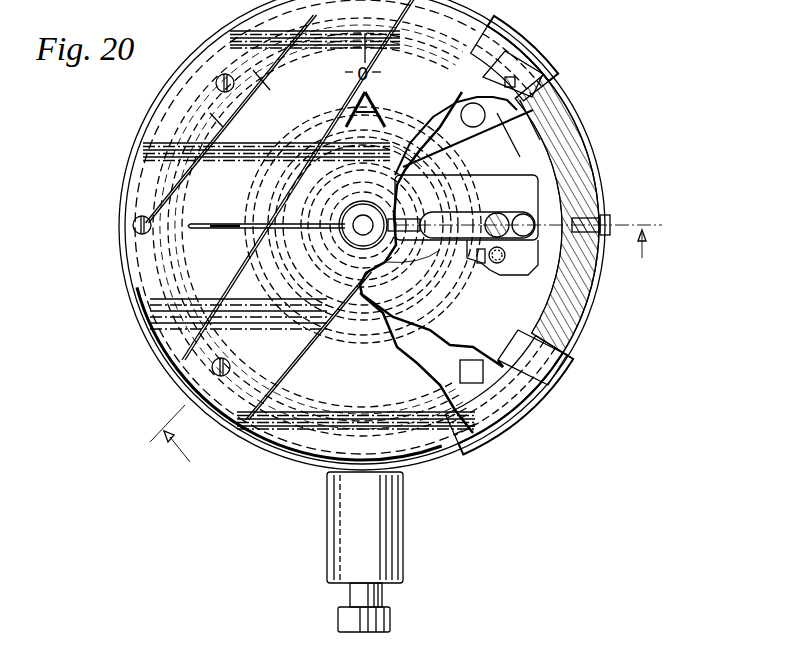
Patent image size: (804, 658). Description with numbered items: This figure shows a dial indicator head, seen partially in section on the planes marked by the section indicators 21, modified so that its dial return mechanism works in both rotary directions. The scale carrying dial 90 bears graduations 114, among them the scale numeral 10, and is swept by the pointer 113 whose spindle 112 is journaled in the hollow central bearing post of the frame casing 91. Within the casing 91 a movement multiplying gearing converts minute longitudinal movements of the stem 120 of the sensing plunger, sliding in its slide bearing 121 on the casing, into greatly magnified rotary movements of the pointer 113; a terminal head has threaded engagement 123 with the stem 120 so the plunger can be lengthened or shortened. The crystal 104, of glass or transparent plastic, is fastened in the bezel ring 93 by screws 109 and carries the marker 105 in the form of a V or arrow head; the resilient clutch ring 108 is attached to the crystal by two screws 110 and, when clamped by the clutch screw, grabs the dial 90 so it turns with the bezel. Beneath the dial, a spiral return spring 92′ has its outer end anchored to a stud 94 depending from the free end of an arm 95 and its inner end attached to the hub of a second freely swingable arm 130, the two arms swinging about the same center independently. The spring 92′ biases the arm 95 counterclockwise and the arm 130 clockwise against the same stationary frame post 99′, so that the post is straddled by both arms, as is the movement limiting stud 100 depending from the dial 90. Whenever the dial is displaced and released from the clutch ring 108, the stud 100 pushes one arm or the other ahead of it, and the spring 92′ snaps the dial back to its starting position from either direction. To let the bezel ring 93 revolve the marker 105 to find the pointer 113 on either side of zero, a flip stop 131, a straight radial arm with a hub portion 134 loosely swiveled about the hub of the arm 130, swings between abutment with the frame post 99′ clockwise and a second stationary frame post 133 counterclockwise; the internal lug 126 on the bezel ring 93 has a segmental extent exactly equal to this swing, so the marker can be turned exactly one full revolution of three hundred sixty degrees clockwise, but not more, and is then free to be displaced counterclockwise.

The gauge 10 is at (362, 412).
The section line 21 is at (411, 350).
The dial 90 is at (540, 56).
The frame casing 91 is at (527, 308).
The return spring 92′ is at (420, 297).
The bezel ring 93 is at (577, 155).
The stud 94 is at (490, 263).
The arm 95 is at (520, 276).
The stationary frame post 99′ is at (532, 220).
The movement limiting stud 100 is at (502, 216).
The crystal 104 is at (450, 347).
The marker 105 is at (376, 103).
The resilient clutch ring 108 is at (522, 45).
The screws 109 is at (133, 226).
The screws 110 is at (233, 89).
The spindle 112 is at (358, 220).
The pointer 113 is at (238, 223).
The graduations 114 is at (357, 55).
The stem of sensing plunger 120 is at (357, 593).
The slide bearing 121 is at (365, 527).
The threaded engagement 123 is at (347, 618).
The internal lug 126 is at (540, 138).
The second freely swingable arm 130 is at (496, 180).
The flip stop 131 is at (480, 127).
The second stationary frame post 133 is at (515, 80).
The hub portion 134 is at (422, 167).